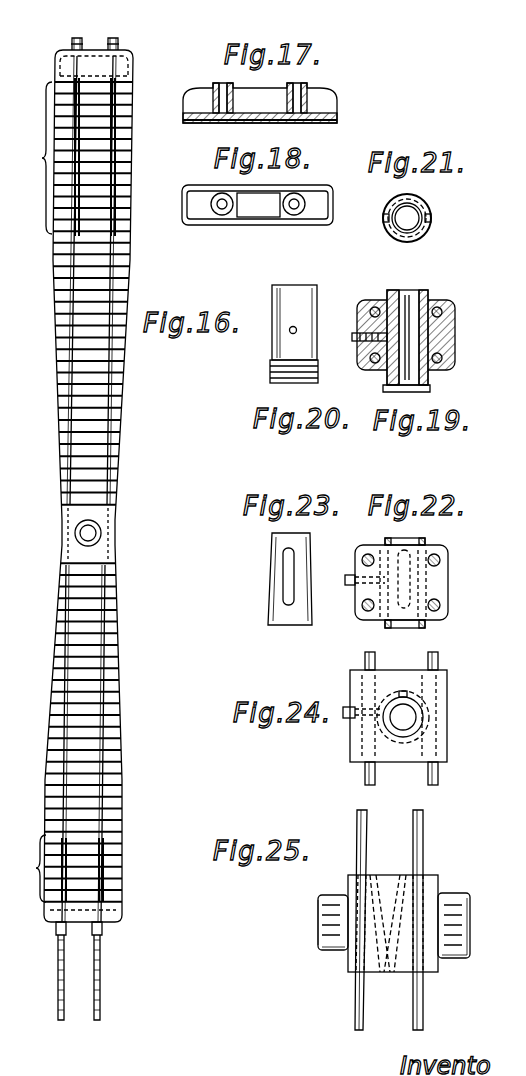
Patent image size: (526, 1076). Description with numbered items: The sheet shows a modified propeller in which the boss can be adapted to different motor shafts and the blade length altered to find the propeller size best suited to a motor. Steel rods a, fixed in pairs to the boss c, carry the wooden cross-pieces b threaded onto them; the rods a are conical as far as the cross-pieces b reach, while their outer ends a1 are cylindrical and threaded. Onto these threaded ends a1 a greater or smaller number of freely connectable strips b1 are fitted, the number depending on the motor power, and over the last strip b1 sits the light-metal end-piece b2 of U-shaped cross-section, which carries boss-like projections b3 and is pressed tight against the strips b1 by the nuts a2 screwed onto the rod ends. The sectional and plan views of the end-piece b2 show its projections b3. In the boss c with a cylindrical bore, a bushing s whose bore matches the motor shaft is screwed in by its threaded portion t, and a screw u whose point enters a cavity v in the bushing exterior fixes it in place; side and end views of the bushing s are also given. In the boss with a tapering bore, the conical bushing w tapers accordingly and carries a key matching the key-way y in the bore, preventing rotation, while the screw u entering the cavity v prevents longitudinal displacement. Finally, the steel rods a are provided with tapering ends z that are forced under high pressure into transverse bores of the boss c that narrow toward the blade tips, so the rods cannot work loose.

In FIG. 16, the steel rods a is at (73, 447).
In FIG. 19, the steel rods a is at (380, 300).
In FIG. 22, the steel rods a is at (366, 556).
In FIG. 24, the steel rods a is at (428, 770).
In FIG. 25, the steel rods a is at (412, 822).
In FIG. 16, the threaded ends of the rods a1 is at (112, 983).
In FIG. 16, the nuts a2 is at (84, 46).
In FIG. 16, the cross-pieces b is at (118, 283).
In FIG. 16, the strips b1 is at (65, 490).
In FIG. 16, the end-piece b2 is at (130, 66).
In FIG. 17, the end-piece b2 is at (322, 117).
In FIG. 18, the end-piece b2 is at (314, 223).
In FIG. 17, the boss-like projections b3 is at (328, 82).
In FIG. 18, the boss-like projections b3 is at (292, 206).
In FIG. 16, the boss c is at (96, 544).
In FIG. 19, the boss c is at (455, 358).
In FIG. 22, the boss c is at (442, 614).
In FIG. 24, the boss c is at (415, 750).
In FIG. 25, the boss c is at (392, 917).
In FIG. 21, the bushing s is at (402, 240).
In FIG. 20, the bushing s is at (282, 347).
In FIG. 19, the bushing s is at (420, 300).
In FIG. 20, the threaded portion t is at (272, 374).
In FIG. 19, the threaded portion t is at (430, 381).
In FIG. 19, the screw u is at (354, 332).
In FIG. 22, the screw u is at (345, 580).
In FIG. 24, the screw u is at (343, 723).
In FIG. 20, the cavity v is at (298, 334).
In FIG. 23, the cavity v is at (272, 574).
In FIG. 23, the conical bushing w is at (268, 612).
In FIG. 22, the conical bushing w is at (404, 628).
In FIG. 23, the key-way y is at (285, 560).
In FIG. 22, the key-way y is at (405, 570).
In FIG. 24, the key-way y is at (405, 697).
In FIG. 25, the tapering ends z is at (402, 875).